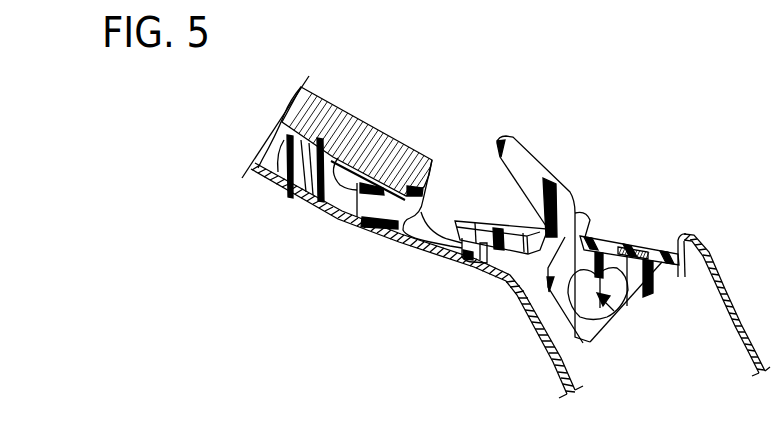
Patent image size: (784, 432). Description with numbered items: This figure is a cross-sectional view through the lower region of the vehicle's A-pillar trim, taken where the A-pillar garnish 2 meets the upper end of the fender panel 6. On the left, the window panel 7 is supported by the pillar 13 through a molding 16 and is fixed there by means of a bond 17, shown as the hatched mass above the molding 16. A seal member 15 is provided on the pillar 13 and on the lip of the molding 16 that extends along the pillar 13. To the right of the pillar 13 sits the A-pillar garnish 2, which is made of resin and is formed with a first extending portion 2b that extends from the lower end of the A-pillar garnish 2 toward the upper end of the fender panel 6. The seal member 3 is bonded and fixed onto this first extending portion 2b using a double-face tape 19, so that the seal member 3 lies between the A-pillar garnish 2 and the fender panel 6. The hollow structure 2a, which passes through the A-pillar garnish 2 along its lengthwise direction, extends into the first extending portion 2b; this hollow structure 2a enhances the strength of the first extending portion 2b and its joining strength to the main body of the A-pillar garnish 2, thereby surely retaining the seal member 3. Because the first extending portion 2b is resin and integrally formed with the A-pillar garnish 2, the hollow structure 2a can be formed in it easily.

The A-pillar garnish 2 is at (537, 149).
The hollow structure 2a is at (598, 296).
The first extending portion 2b is at (635, 298).
The seal member 3 is at (660, 247).
The fender panel 6 is at (732, 288).
The window panel 7 is at (360, 127).
The pillar 13 is at (523, 310).
The seal member 15 is at (480, 264).
The molding 16 is at (375, 208).
The bond 17 is at (297, 177).
The double-face tape 19 is at (638, 247).